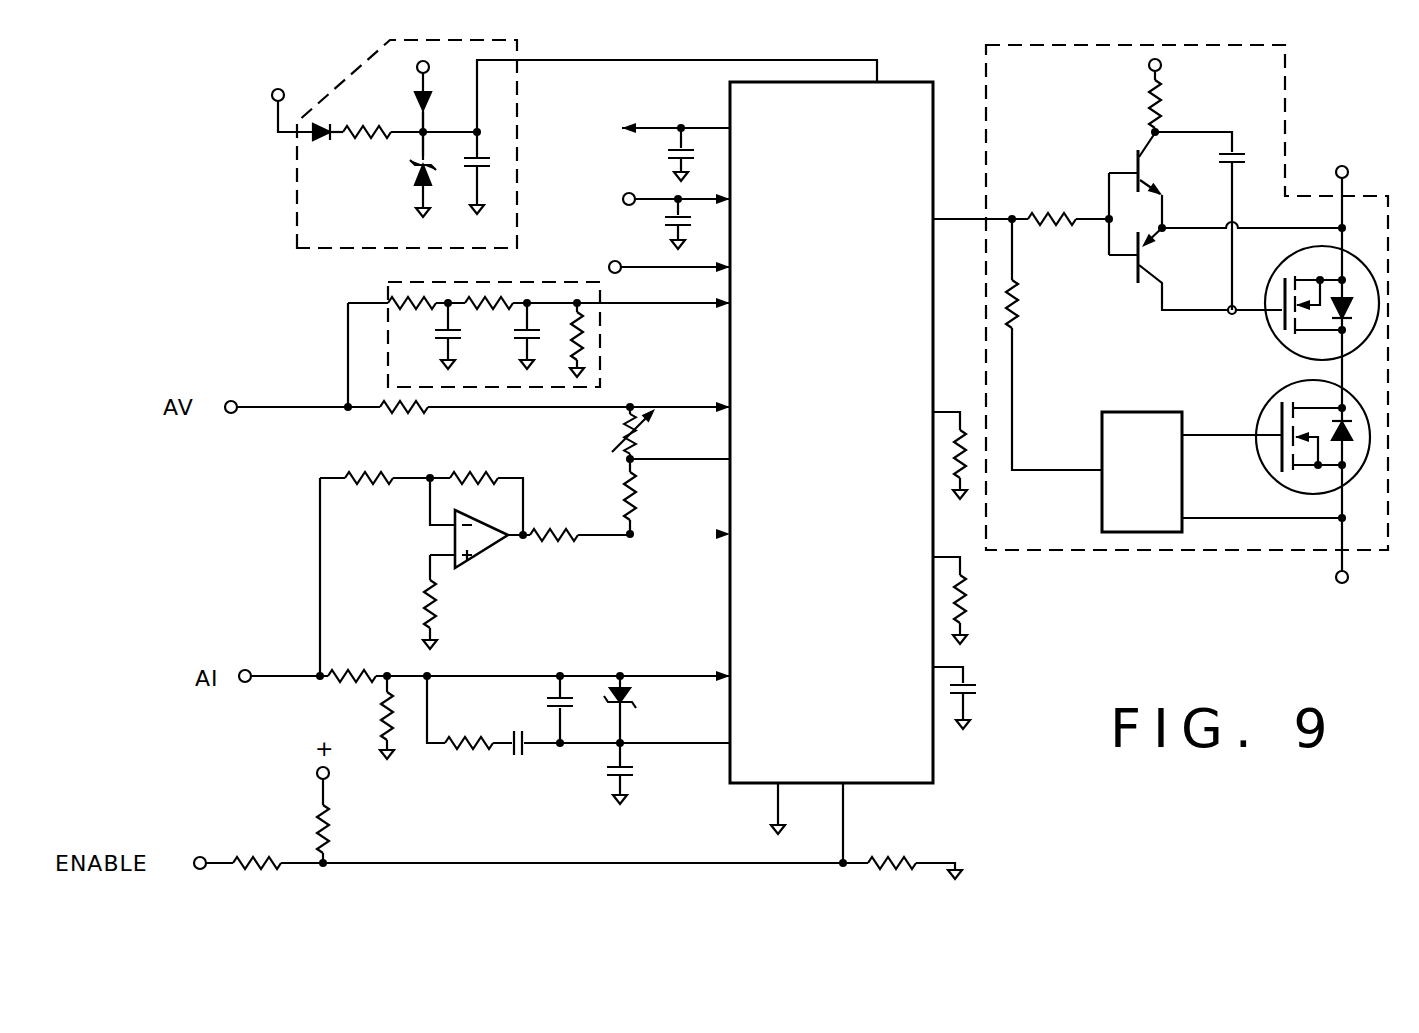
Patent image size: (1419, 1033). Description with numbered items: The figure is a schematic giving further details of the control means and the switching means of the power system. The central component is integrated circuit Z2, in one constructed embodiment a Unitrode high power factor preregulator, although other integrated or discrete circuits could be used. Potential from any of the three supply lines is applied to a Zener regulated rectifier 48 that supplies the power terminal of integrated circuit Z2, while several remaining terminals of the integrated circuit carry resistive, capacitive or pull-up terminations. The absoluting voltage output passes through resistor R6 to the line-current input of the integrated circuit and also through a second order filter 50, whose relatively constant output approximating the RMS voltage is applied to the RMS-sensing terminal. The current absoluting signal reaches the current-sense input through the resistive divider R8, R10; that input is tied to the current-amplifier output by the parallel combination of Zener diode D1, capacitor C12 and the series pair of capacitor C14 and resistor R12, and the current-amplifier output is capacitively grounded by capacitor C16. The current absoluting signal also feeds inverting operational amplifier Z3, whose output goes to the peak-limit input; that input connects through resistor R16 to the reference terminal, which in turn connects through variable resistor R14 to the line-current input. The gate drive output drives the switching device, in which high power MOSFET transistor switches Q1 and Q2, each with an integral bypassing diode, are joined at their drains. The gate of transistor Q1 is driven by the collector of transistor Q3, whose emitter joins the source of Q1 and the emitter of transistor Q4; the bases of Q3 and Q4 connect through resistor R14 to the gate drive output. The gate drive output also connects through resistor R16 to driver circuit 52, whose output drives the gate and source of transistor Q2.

The integrated circuit Z2 is at (933, 770).
The Zener regulated rectifier 48 is at (297, 190).
The second order filter 50 is at (388, 292).
The resistor R6 is at (383, 410).
The variable resistor R14 is at (622, 430).
The resistor R16 is at (623, 496).
The inverting operational amplifier Z3 is at (468, 566).
The resistor of resistive divider R8 is at (338, 676).
The resistor of resistive divider R10 is at (380, 710).
The capacitor C12 is at (546, 710).
The resistor R12 is at (488, 765).
The capacitor C14 is at (519, 758).
The Zener diode D1 is at (640, 700).
The capacitor C16 is at (636, 773).
The transistor Q4 is at (1133, 158).
The transistor Q3 is at (1135, 268).
The high power MOSFET transistor switch Q1 is at (1280, 278).
The high power MOSFET transistor switch Q2 is at (1282, 402).
The driver circuit 52 is at (1140, 412).